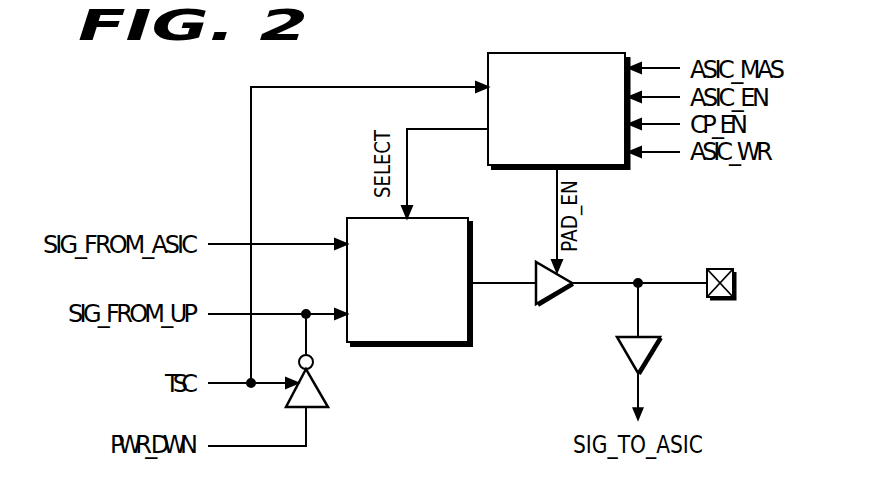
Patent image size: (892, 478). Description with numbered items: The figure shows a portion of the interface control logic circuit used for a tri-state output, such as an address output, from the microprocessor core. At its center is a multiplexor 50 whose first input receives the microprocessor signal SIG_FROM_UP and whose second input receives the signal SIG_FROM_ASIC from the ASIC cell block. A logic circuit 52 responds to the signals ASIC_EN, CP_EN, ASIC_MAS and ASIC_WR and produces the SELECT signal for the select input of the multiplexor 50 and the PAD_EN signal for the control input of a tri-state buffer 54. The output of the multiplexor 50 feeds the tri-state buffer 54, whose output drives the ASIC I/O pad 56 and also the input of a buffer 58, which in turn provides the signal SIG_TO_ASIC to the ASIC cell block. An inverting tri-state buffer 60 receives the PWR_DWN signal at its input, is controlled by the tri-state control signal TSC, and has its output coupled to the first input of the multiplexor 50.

The multiplexor 50 is at (440, 349).
The logic circuit 52 is at (532, 52).
The tri-state buffer 54 is at (555, 292).
The ASIC I/O pad 56 is at (721, 268).
The buffer 58 is at (650, 362).
The inverting tri-state buffer 60 is at (318, 409).